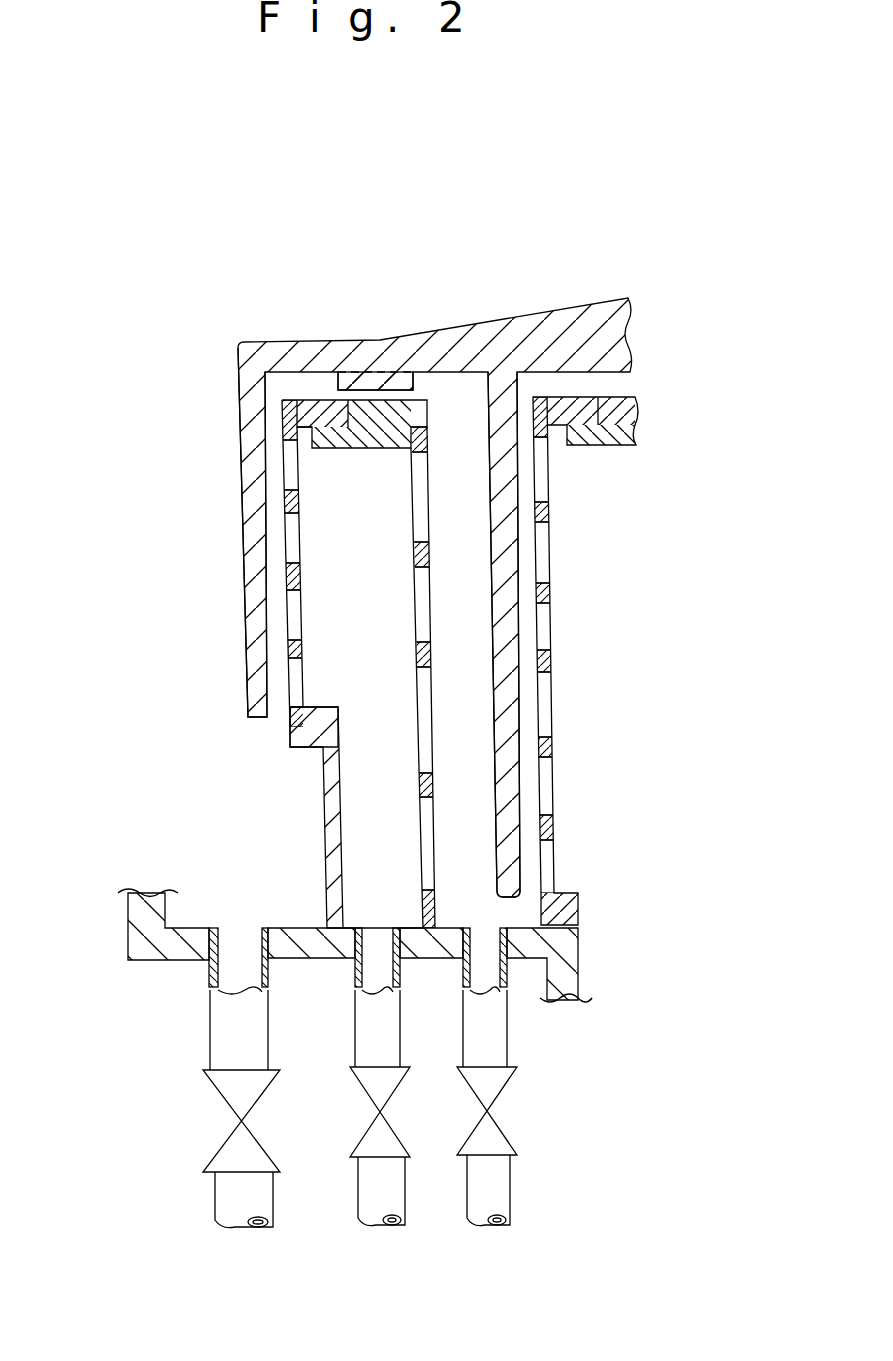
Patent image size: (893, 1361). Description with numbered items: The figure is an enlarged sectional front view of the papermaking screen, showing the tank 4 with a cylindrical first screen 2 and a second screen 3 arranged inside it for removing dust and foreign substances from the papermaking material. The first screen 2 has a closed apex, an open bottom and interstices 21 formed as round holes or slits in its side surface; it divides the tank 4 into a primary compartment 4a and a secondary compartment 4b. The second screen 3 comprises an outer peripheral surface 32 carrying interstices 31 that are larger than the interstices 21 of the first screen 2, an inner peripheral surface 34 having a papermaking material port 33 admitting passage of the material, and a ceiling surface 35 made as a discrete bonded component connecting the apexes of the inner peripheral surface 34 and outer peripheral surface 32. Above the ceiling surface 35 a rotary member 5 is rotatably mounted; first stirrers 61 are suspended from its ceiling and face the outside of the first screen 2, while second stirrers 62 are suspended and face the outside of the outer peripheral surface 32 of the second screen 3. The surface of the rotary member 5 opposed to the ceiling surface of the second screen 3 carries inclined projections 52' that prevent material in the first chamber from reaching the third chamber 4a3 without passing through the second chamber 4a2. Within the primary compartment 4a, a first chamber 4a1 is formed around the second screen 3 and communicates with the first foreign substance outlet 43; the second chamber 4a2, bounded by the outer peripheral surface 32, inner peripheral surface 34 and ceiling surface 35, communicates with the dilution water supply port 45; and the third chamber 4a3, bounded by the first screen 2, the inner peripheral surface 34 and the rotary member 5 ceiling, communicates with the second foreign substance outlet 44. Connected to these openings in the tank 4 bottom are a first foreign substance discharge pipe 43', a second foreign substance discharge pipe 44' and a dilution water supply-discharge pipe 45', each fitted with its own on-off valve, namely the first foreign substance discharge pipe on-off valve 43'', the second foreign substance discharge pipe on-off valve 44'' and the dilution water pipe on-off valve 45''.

The first screen 2 is at (560, 748).
The interstices 21 is at (541, 475).
The second screen 3 is at (355, 648).
The interstices 31 is at (292, 469).
The outer peripheral surface 32 is at (294, 572).
The papermaking material port 33 is at (423, 487).
The inner peripheral surface 34 is at (413, 567).
The ceiling surface 35 is at (378, 433).
The tank 4 is at (190, 767).
The primary compartment 4a is at (208, 634).
The first chamber 4a1 is at (206, 853).
The second chamber 4a2 is at (366, 776).
The third chamber 4a3 is at (463, 677).
The secondary compartment 4b is at (654, 608).
The first foreign substance outlet 43 is at (247, 916).
The first foreign substance discharge pipe 43' is at (202, 1081).
The first foreign substance discharge pipe on-off valve 43'' is at (199, 1206).
The second foreign substance outlet 44 is at (477, 912).
The second foreign substance discharge pipe 44' is at (529, 1072).
The second foreign substance discharge pipe on-off valve 44'' is at (541, 1190).
The dilution water supply port 45 is at (379, 920).
The dilution water supply-discharge pipe 45' is at (347, 1073).
The dilution water pipe on-off valve 45'' is at (347, 1215).
The rotary member 5 is at (462, 347).
The projection 52' is at (283, 395).
The first stirrer 61 is at (496, 540).
The second stirrer 62 is at (248, 472).